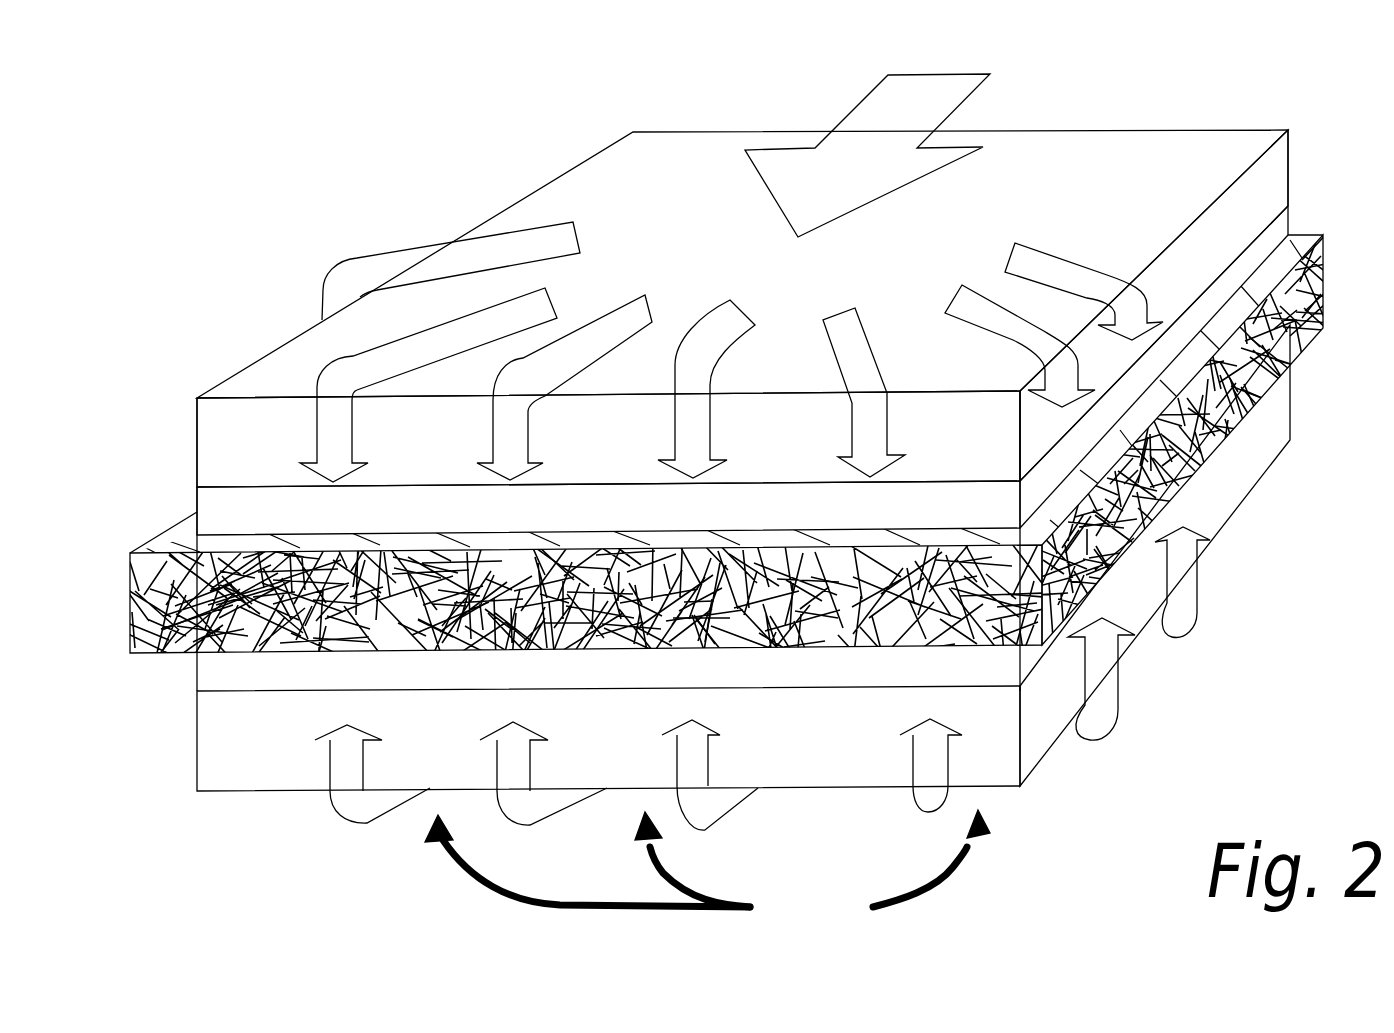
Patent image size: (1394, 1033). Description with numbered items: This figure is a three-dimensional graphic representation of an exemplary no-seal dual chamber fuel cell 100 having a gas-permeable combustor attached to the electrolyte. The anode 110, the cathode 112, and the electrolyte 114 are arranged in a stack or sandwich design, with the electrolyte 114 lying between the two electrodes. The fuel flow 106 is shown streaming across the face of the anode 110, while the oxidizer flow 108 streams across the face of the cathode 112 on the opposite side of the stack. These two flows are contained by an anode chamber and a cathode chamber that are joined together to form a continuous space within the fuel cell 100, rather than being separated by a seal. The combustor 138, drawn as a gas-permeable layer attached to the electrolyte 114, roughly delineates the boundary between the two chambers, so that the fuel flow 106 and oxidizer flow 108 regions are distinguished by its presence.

The no-seal dual chamber fuel cell 100 is at (1232, 86).
The fuel flow 106 is at (800, 331).
The oxidizer flow 108 is at (835, 943).
The anode 110 is at (273, 472).
The cathode 112 is at (373, 716).
The electrolyte 114 is at (427, 516).
The combustor 138 is at (147, 540).